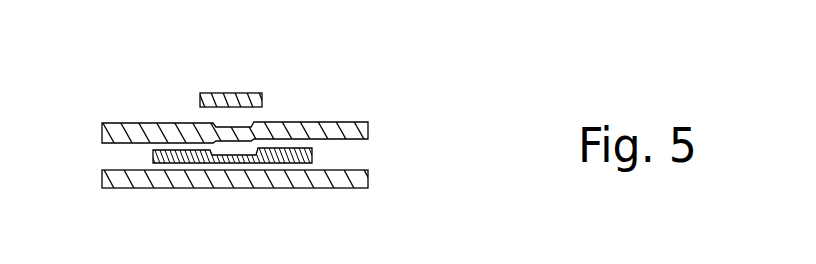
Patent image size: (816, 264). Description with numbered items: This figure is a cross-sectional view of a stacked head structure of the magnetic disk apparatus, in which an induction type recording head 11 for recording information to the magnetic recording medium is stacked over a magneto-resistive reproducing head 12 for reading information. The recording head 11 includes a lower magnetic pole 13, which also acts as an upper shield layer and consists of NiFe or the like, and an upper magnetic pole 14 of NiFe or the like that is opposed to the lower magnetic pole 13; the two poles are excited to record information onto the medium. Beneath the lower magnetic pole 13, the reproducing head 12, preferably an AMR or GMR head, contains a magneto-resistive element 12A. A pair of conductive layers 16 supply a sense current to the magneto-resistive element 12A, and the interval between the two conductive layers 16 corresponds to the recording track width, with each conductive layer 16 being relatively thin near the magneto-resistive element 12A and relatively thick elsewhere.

The recording head 11 is at (185, 98).
The reproducing head 12 is at (140, 155).
The magneto-resistive element 12A is at (278, 158).
The lower magnetic pole 13 is at (347, 122).
The upper magnetic pole 14 is at (248, 92).
The conductive layer 16 is at (163, 150).